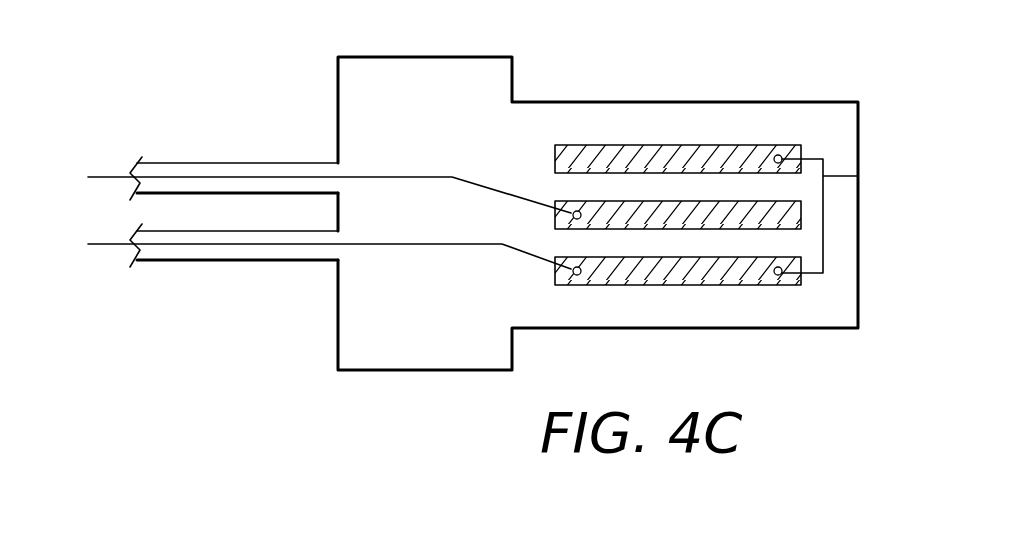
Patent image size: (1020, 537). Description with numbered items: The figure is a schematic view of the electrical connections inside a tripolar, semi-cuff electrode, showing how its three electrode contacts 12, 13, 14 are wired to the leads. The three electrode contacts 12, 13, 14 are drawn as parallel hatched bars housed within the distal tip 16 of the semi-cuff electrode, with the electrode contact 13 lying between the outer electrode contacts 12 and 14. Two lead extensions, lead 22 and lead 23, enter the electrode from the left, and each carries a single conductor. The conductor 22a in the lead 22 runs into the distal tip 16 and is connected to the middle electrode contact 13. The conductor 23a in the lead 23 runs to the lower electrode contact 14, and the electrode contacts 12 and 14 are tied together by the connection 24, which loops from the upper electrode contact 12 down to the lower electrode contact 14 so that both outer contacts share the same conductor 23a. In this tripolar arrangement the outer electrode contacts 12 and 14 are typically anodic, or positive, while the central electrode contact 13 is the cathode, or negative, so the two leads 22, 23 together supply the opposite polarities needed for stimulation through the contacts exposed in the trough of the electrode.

The electrode contact 12 is at (678, 145).
The electrode contact 13 is at (801, 217).
The electrode contact 14 is at (677, 285).
The distal tip 16 is at (829, 102).
The lead 22 is at (218, 163).
The conductor 22a is at (105, 177).
The lead 23 is at (218, 261).
The conductor 23a is at (105, 244).
The connection 24 is at (858, 176).